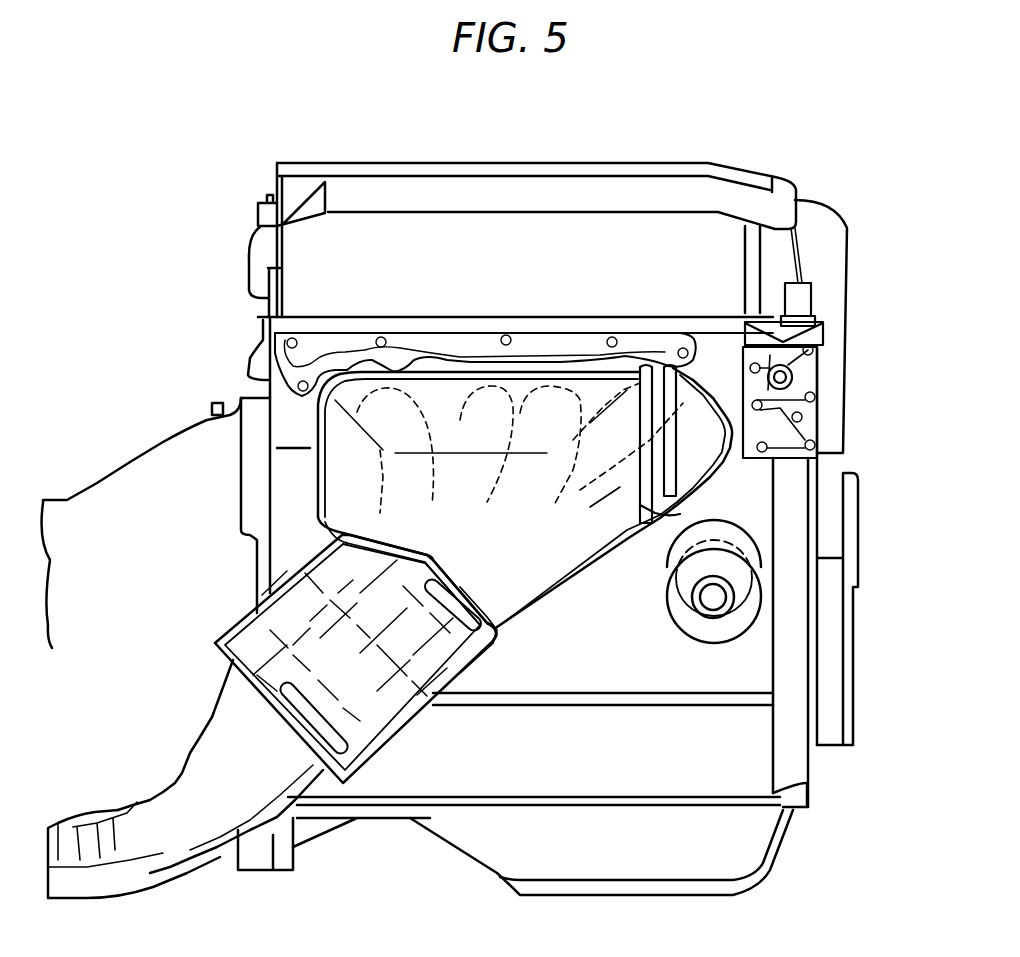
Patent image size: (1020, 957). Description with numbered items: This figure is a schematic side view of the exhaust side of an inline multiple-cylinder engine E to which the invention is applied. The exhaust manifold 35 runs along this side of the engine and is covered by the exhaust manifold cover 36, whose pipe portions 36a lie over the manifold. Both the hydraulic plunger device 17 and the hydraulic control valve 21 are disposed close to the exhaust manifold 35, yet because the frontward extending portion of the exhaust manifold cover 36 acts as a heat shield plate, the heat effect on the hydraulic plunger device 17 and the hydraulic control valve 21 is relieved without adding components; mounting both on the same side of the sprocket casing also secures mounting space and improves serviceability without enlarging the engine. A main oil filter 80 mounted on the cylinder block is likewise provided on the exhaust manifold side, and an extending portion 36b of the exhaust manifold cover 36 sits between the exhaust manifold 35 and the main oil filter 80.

The engine E is at (840, 203).
The exhaust manifold cover 36 is at (527, 390).
The intake manifold pipes 36a is at (717, 388).
The extending portion of the exhaust manifold cover 36b is at (660, 517).
The exhaust manifold 35 is at (627, 490).
The main oil filter 80 is at (718, 630).
The hydraulic control valve 21 is at (823, 332).
The hydraulic plunger device 17 is at (797, 423).